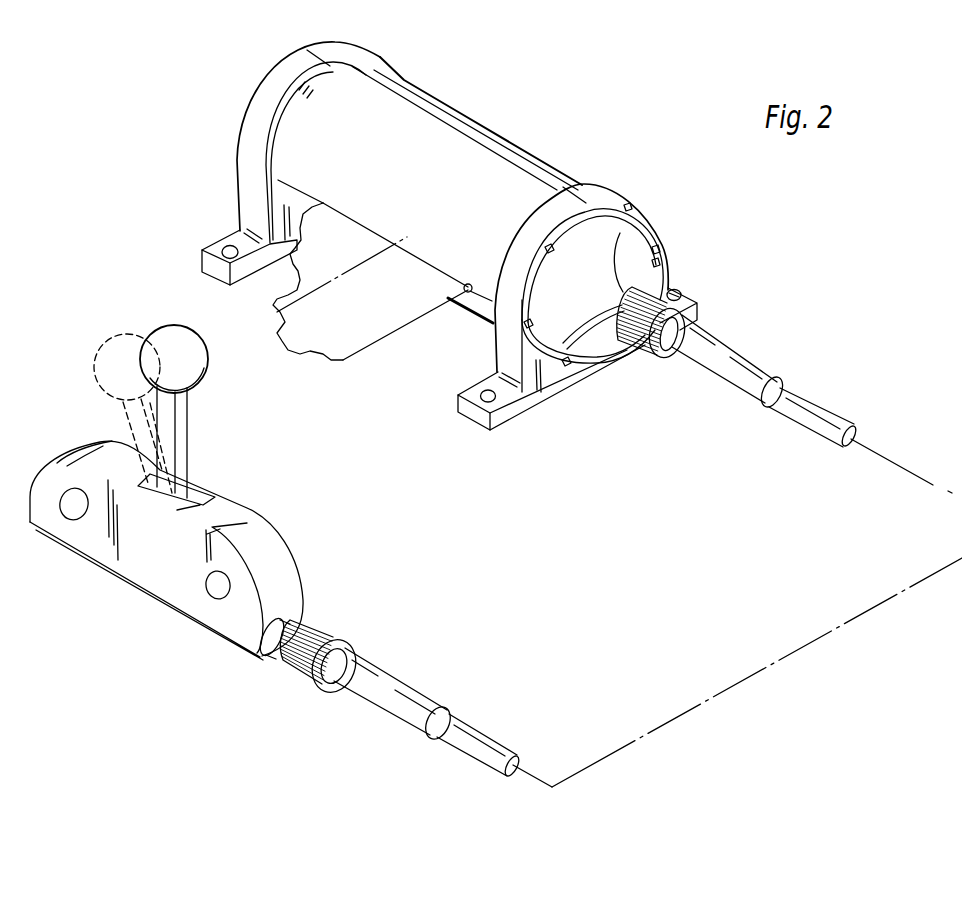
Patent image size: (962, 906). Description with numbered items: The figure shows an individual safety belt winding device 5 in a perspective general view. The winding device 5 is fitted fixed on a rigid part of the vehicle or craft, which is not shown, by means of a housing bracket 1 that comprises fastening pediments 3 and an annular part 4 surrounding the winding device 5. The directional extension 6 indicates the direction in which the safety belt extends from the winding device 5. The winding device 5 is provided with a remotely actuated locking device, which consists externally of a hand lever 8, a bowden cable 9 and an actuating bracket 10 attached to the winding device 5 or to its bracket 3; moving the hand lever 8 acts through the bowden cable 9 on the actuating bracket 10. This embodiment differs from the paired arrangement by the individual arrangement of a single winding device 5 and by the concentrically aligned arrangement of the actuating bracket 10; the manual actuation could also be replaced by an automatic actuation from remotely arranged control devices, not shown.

The housing bracket 1 is at (233, 137).
The fastening pediment 3 is at (220, 240).
The annular part 4 is at (284, 87).
The safety belt winding device 5 is at (307, 148).
The directional extension of the safety belt 6 is at (264, 325).
The hand lever 8 is at (207, 372).
The bowden cable 9 is at (828, 420).
The actuating bracket 10 is at (640, 243).